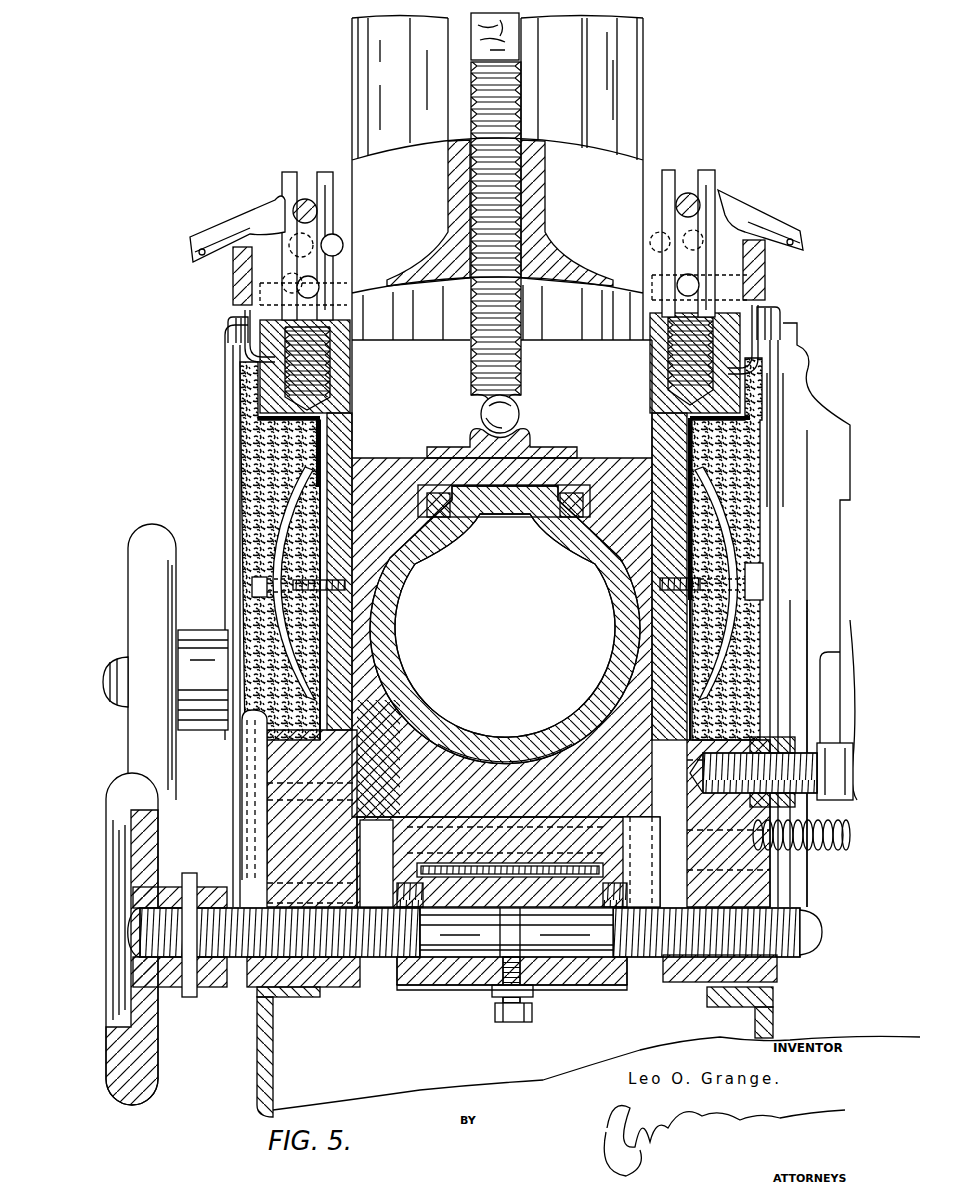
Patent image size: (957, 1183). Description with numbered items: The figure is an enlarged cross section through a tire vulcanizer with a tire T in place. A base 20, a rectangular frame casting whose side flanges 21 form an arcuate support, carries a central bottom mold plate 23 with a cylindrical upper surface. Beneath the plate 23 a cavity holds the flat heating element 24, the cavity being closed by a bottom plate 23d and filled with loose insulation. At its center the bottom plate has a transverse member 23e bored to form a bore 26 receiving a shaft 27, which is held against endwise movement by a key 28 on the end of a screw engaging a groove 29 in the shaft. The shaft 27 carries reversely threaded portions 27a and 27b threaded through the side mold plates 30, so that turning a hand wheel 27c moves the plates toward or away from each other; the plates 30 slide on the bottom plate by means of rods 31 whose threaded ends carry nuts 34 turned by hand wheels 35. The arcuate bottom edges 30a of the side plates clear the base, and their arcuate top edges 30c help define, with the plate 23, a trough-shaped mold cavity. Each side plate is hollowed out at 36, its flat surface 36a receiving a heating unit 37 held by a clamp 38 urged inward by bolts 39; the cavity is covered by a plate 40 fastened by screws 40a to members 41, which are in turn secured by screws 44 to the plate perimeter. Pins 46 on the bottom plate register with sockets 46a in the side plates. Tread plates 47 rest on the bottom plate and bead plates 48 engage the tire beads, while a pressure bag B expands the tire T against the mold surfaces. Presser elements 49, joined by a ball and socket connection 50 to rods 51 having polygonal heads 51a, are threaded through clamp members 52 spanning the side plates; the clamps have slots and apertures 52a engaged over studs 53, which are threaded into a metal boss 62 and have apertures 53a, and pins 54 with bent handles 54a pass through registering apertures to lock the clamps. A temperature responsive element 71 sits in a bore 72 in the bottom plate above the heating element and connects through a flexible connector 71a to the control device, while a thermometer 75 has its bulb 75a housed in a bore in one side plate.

The base 20 is at (257, 1097).
The side flanges 21 is at (310, 1010).
The bottom mold plate 23 is at (460, 977).
The bottom plate 23d is at (445, 962).
The transverse member 23e is at (593, 973).
The heating element 24 is at (422, 870).
The bore 26 is at (462, 975).
The shaft 27 is at (555, 940).
The reversely threaded portion 27a is at (323, 957).
The reversely threaded portion 27b is at (787, 950).
The hand wheel 27c is at (125, 1105).
The key 28 is at (518, 1023).
The groove 29 is at (503, 963).
The side mold plates 30 is at (240, 415).
The arcuate bottom edges 30a is at (270, 970).
The top edges 30c is at (250, 300).
The rods 31 is at (113, 703).
The nuts 34 is at (197, 632).
The hand wheels 35 is at (128, 597).
The hollowed-out portions 36 is at (258, 424).
The surfaces 36a is at (325, 447).
The heating units 37 is at (322, 427).
The clamps 38 is at (273, 552).
The bolts 39 is at (253, 587).
The plates 40 is at (238, 487).
The screws 40a is at (242, 395).
The members 41 is at (228, 327).
The screws 44 is at (245, 340).
The pins 46 is at (633, 883).
The sockets 46a is at (360, 962).
The tread plates 47 is at (403, 787).
The bead plates 48 is at (393, 472).
The presser elements 49 is at (550, 447).
The ball and socket connection 50 is at (513, 412).
The rods 51 is at (473, 302).
The polygonal head 51a is at (477, 38).
The clamp members 52 is at (622, 168).
The slots 52a is at (330, 237).
The studs 53 is at (295, 178).
The apertures 53a is at (297, 202).
The pins 54 is at (293, 213).
The handles 54a is at (210, 240).
The boss of metal 62 is at (273, 368).
The temperature responsive element 71 is at (400, 856).
The flexible connector 71a is at (840, 847).
The bore 72 is at (407, 840).
The thermometer 75 is at (847, 622).
The bulb 75a is at (800, 722).
The pressure bag B is at (413, 578).
The tire T is at (517, 767).